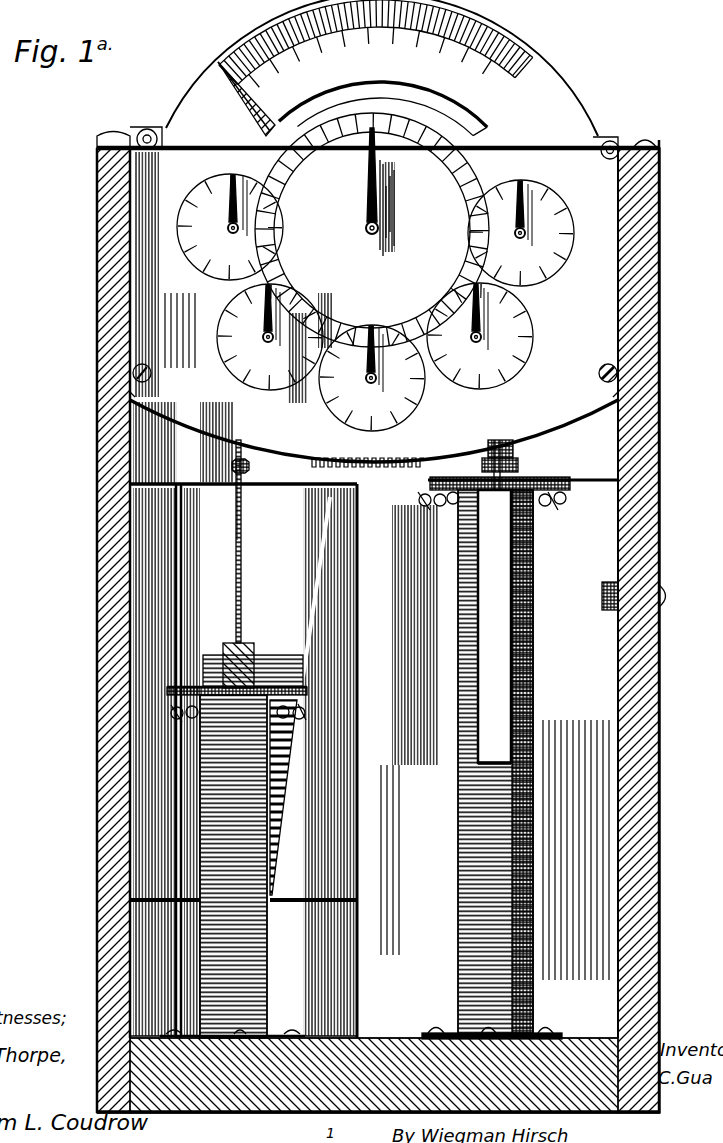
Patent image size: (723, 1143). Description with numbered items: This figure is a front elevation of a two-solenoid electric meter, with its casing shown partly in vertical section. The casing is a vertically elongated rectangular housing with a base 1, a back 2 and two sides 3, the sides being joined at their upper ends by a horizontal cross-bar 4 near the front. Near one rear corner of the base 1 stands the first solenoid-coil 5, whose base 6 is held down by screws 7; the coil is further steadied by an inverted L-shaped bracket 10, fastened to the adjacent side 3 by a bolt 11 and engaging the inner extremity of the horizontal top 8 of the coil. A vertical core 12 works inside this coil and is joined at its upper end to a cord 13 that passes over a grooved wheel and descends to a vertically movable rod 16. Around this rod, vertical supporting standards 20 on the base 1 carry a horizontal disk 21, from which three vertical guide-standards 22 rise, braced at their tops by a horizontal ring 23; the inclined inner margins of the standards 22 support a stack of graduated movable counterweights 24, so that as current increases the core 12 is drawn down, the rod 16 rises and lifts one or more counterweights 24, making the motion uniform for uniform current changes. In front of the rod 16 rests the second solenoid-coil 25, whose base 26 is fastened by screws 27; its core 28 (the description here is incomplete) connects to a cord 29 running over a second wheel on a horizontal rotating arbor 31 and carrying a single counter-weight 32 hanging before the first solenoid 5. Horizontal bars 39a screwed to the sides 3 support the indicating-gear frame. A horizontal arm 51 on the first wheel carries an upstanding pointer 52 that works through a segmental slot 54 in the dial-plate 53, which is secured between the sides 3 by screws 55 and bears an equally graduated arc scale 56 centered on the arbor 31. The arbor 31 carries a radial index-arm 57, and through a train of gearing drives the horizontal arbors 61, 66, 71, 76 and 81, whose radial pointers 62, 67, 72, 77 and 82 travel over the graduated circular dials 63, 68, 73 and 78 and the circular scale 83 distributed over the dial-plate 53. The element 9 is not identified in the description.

The base 1 is at (172, 758).
The back 2 is at (409, 655).
The sides 3 is at (96, 715).
The horizontal cross-bar 4 is at (358, 150).
The first solenoid-coil 5 is at (532, 812).
The base of the first solenoid-coil 6 is at (447, 1032).
The screws 7 is at (430, 1031).
The horizontal top of the coil 8 is at (413, 472).
The nut 9 is at (518, 465).
The inverted L-shaped bracket 10 is at (578, 479).
The bolt 11 is at (669, 596).
The vertical core 12 is at (516, 445).
The cord 13 is at (250, 466).
The vertically movable rod 16 is at (243, 546).
The vertical supporting standards 20 is at (130, 946).
The horizontal disk 21 is at (297, 897).
The vertical guide-standards 22 is at (176, 613).
The horizontal ring 23 is at (238, 589).
The movable counterweights 24 is at (293, 743).
The second solenoid-coil 25 is at (284, 814).
The base of the second solenoid-coil 26 is at (288, 1034).
The screws 27 is at (177, 1038).
The weight 28 is at (256, 645).
The cord 29 is at (236, 534).
The horizontal rotating arbor 31 is at (381, 228).
The counter-weight 32 is at (495, 673).
The horizontal bars 39a is at (152, 378).
The horizontal arm 51 is at (392, 172).
The pointer 52 is at (262, 109).
The dial-plate 53 is at (374, 317).
The segmental slot 54 is at (427, 101).
The screws 55 is at (153, 151).
The scale 56 is at (468, 22).
The radial index-arm 57 is at (383, 194).
The horizontal arbor 61 is at (233, 237).
The radial pointer 62 is at (228, 222).
The circular dial 63 is at (207, 228).
The horizontal arbor 66 is at (266, 344).
The radial pointer 67 is at (262, 327).
The circular dial 68 is at (244, 343).
The horizontal arbor 71 is at (369, 389).
The radial pointer 72 is at (377, 372).
The circular dial 73 is at (331, 408).
The horizontal arbor 76 is at (474, 350).
The radial pointer 77 is at (482, 342).
The circular dial 78 is at (468, 392).
The horizontal arbor 81 is at (527, 243).
The radial pointer 82 is at (527, 225).
The graduated circular scale 83 is at (568, 236).